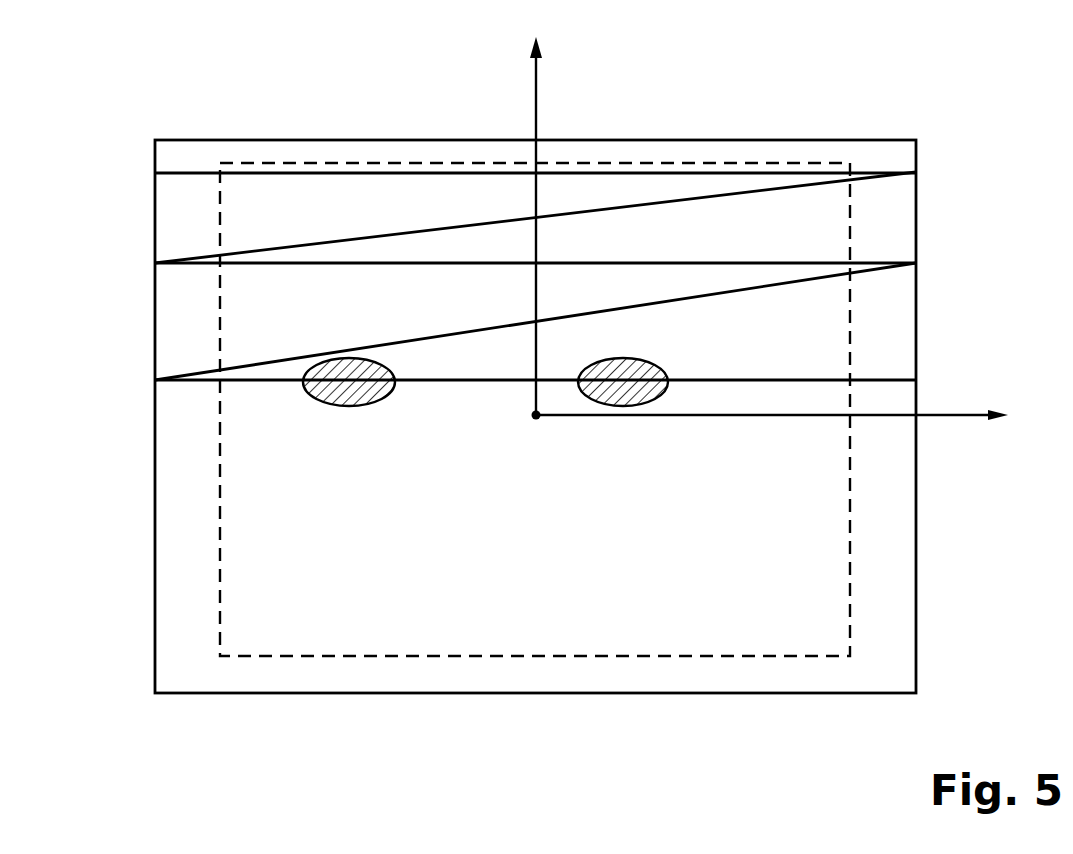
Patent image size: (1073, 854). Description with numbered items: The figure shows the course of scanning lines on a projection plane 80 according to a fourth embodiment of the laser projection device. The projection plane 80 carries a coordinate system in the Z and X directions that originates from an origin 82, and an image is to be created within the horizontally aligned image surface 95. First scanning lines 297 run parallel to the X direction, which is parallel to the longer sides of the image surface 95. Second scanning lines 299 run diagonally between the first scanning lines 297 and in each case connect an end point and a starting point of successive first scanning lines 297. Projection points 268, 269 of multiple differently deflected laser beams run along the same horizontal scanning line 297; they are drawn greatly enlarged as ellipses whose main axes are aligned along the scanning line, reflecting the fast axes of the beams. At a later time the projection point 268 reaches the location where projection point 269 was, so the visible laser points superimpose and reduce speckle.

The projection plane 80 is at (312, 140).
The origin 82 is at (533, 419).
The image surface 95 is at (334, 655).
The projection point 268 is at (340, 406).
The projection point 269 is at (635, 359).
The first scanning line 297 is at (290, 174).
The second scanning line 299 is at (672, 204).